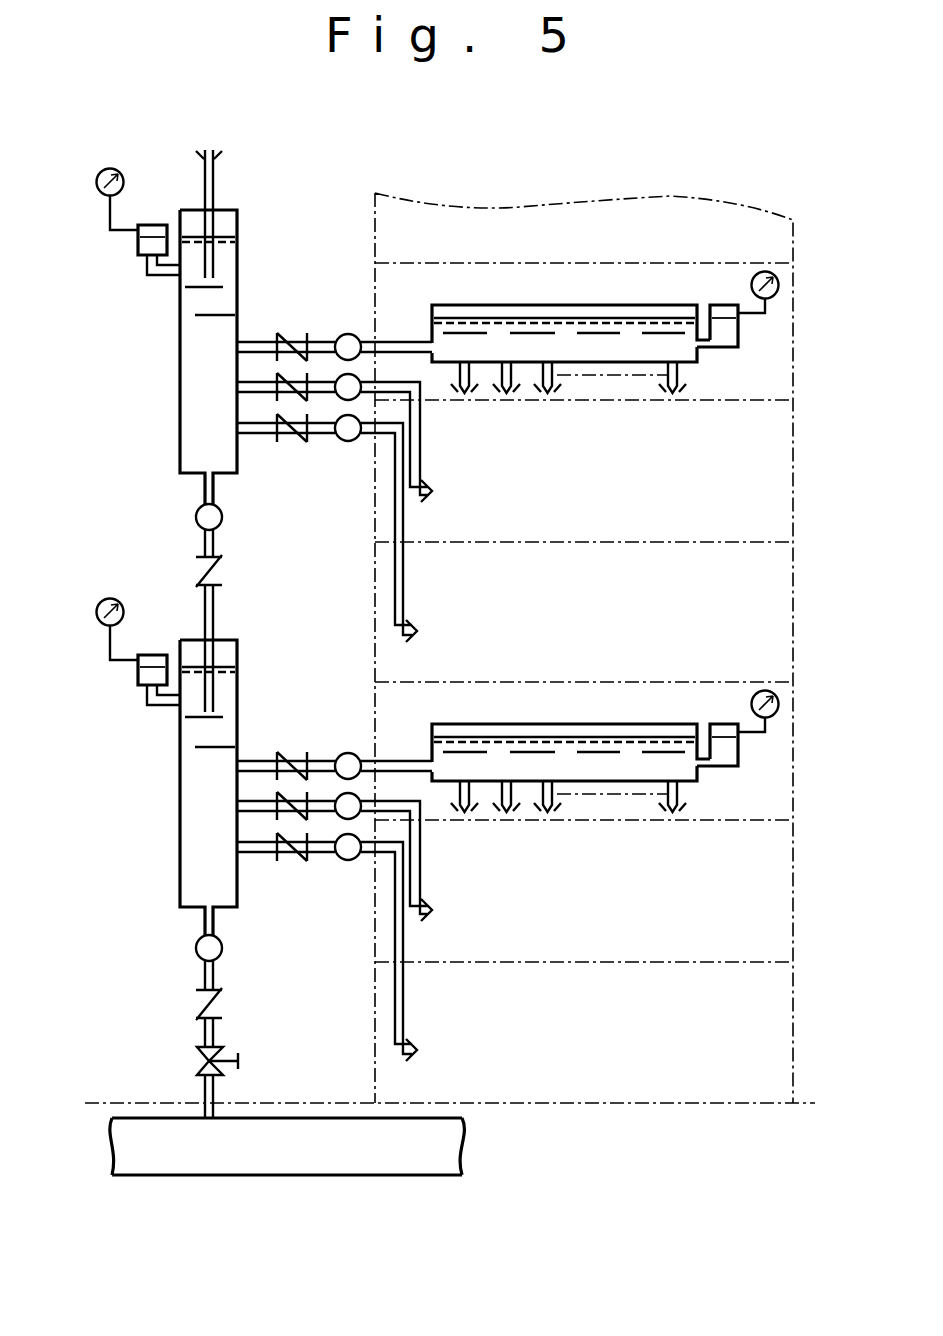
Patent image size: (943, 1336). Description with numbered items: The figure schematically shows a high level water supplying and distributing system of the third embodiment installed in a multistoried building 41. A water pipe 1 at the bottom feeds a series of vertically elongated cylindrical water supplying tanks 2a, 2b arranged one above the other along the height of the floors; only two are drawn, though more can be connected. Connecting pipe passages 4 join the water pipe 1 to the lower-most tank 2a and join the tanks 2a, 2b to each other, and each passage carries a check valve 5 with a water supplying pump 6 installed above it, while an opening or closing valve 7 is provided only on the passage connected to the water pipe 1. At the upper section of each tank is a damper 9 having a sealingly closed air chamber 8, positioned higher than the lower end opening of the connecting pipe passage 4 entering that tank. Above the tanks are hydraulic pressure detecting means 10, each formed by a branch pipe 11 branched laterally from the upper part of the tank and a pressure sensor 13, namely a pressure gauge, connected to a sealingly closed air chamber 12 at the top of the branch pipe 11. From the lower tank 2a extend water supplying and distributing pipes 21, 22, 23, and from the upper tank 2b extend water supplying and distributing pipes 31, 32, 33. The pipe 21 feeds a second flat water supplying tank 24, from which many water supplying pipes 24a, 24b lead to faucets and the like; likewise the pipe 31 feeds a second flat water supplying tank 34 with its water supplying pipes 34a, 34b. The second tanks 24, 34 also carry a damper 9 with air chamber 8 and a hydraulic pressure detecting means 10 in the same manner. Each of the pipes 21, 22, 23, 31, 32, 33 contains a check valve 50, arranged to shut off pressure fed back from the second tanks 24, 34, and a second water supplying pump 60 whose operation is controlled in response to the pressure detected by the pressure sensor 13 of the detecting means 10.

The water pipe 1 is at (328, 1117).
The water supplying tank 2a is at (180, 884).
The water supplying tank 2b is at (180, 330).
The connecting pipe passage 4 is at (215, 172).
The check valve 5 is at (222, 572).
The water supplying pump 6 is at (196, 517).
The opening or closing valve 7 is at (200, 1058).
The sealingly closed air chamber 8 is at (238, 218).
The damper 9 is at (238, 265).
The hydraulic pressure detecting means 10 is at (404, 470).
The branch pipe 11 is at (145, 252).
The sealingly closed air chamber 12 is at (153, 225).
The pressure sensor 13 is at (110, 168).
The water supplying and distributing pipe 21 is at (252, 846).
The water supplying and distributing pipe 22 is at (252, 802).
The water supplying and distributing pipe 23 is at (257, 762).
The second flat water supplying tank 24 is at (465, 775).
The water supplying pipe 24a is at (452, 797).
The water supplying pipe 24b is at (497, 797).
The water supplying and distributing pipe 31 is at (250, 425).
The water supplying and distributing pipe 32 is at (248, 385).
The water supplying and distributing pipe 33 is at (258, 342).
The second flat water supplying tank 34 is at (505, 355).
The water supplying pipe 34a is at (452, 378).
The water supplying pipe 34b is at (496, 378).
The multistoried building 41 is at (797, 362).
The check valve 50 is at (293, 440).
The second water supplying pump 60 is at (348, 441).